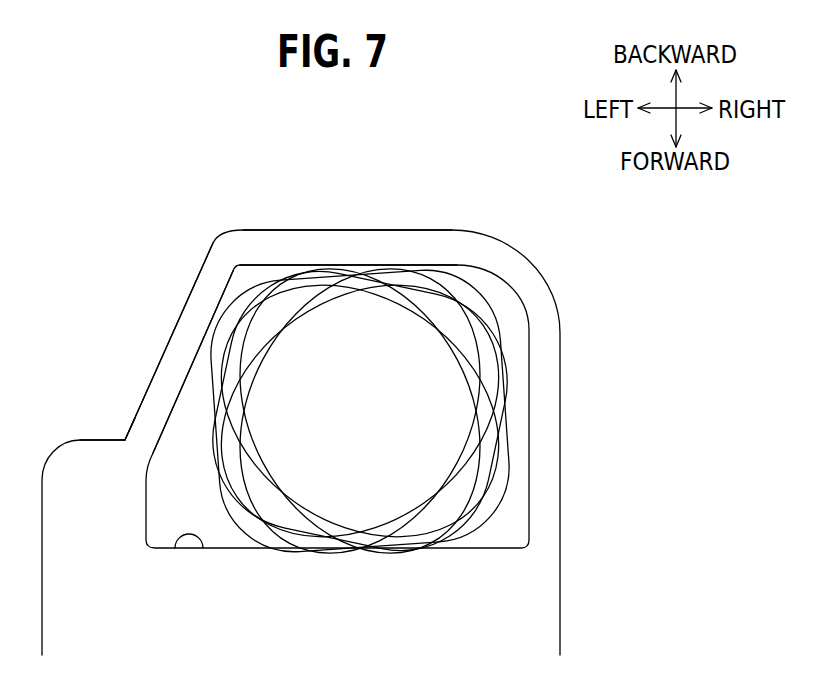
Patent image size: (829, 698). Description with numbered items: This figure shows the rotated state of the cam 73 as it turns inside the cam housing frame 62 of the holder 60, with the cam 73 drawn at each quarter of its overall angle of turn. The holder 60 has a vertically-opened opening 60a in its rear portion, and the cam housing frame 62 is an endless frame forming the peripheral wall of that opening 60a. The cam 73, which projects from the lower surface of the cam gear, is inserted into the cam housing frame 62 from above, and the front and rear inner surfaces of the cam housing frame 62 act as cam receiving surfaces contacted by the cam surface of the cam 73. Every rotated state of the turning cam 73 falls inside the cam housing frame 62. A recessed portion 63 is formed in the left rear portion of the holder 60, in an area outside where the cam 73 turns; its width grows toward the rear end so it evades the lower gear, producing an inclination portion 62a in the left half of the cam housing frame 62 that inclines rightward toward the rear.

The holder 60 is at (378, 229).
The opening 60a is at (200, 543).
The cam housing frame 62 is at (303, 237).
The inclination portion 62a is at (196, 308).
The recessed portion 63 is at (125, 436).
The cam 73 is at (433, 322).